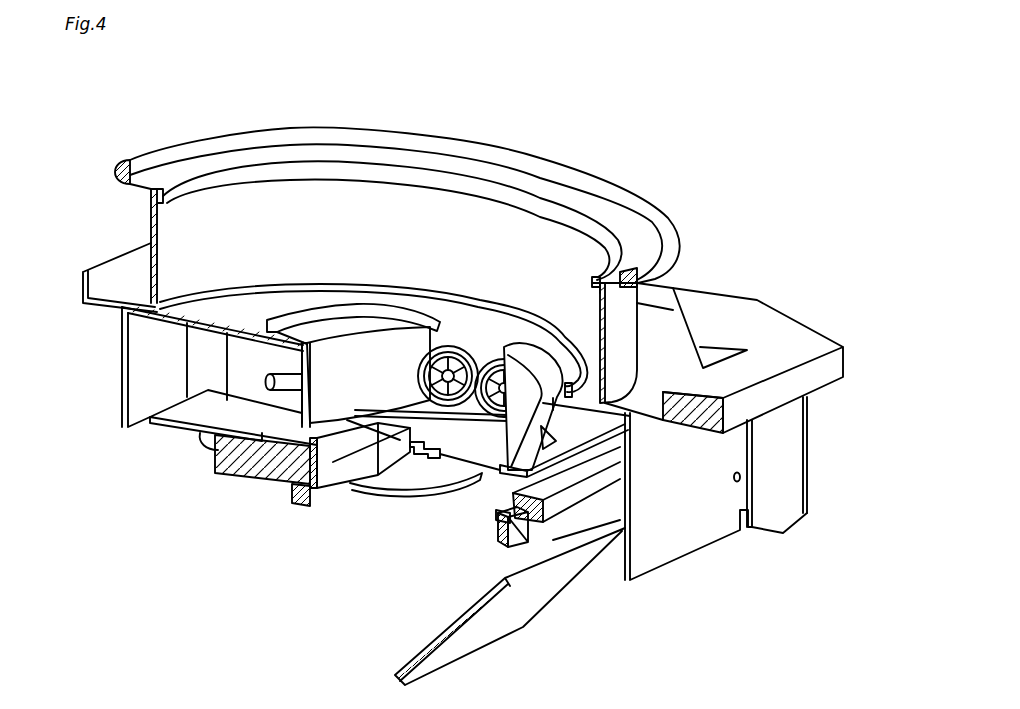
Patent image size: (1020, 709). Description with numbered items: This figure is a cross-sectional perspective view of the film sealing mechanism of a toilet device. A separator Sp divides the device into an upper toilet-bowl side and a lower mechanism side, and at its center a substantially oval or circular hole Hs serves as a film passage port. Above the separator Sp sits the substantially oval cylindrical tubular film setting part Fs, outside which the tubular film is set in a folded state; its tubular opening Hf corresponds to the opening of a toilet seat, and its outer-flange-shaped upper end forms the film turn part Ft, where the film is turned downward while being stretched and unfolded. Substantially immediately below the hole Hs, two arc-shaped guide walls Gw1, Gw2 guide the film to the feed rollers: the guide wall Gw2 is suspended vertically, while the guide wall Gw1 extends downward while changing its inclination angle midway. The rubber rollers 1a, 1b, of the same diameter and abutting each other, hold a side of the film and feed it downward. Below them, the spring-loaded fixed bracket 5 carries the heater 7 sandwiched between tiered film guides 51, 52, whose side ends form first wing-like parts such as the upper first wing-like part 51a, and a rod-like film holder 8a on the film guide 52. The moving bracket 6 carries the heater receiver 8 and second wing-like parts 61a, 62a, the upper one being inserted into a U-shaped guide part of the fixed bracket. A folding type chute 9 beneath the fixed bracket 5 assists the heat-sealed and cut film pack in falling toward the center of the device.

The tubular opening Hf is at (218, 232).
The guide wall Gw2 is at (348, 360).
The hole Hs is at (396, 360).
The film turn part Ft is at (455, 144).
The guide wall Gw1 is at (533, 365).
The upper first wing-like part 51a is at (562, 427).
The separator Sp is at (663, 337).
The tubular film setting part Fs is at (150, 227).
The rubber roller 1a is at (447, 407).
The rubber roller 1b is at (503, 407).
The film guide 51 is at (510, 475).
The heater 7 is at (512, 505).
The second wing-like part 62a is at (408, 478).
The second wing-like part 61a is at (395, 453).
The heater receiver 8 is at (340, 475).
The moving bracket 6 is at (273, 482).
The film holder 8a is at (498, 520).
The film guide 52 is at (511, 547).
The fixed bracket 5 is at (580, 518).
The chute 9 is at (487, 637).